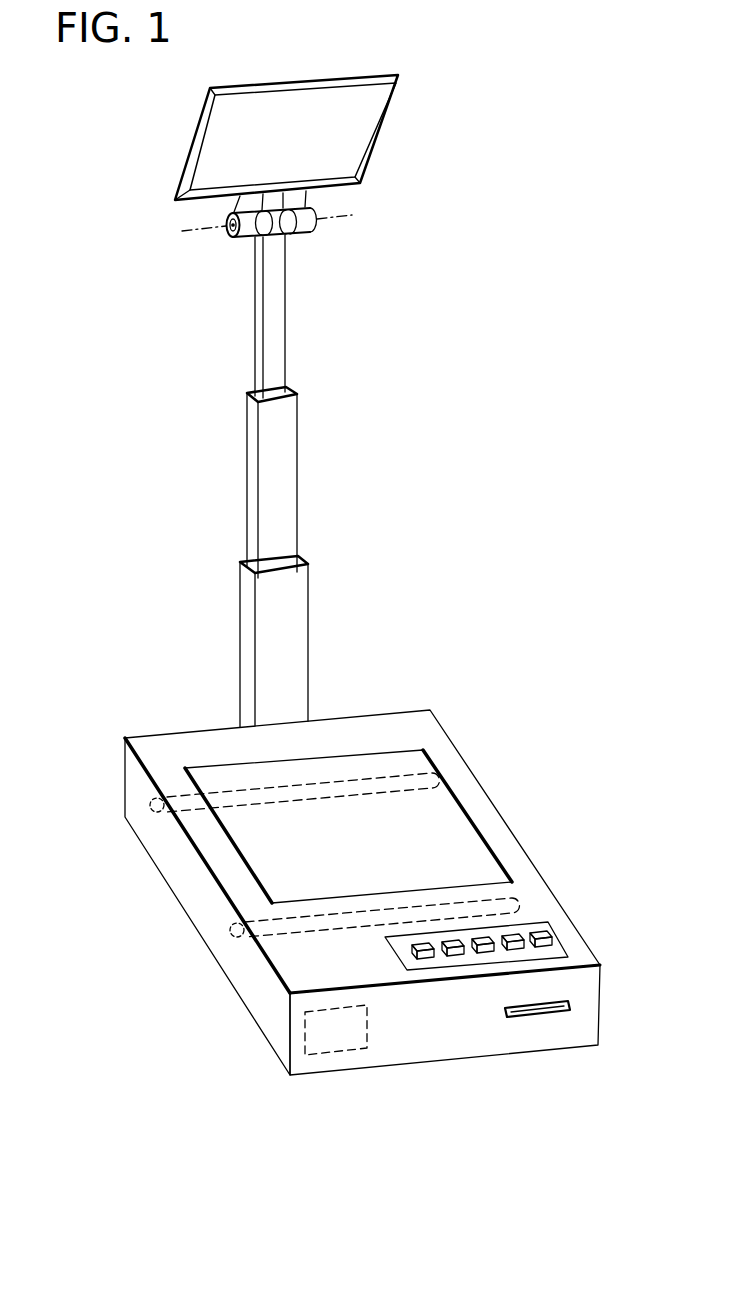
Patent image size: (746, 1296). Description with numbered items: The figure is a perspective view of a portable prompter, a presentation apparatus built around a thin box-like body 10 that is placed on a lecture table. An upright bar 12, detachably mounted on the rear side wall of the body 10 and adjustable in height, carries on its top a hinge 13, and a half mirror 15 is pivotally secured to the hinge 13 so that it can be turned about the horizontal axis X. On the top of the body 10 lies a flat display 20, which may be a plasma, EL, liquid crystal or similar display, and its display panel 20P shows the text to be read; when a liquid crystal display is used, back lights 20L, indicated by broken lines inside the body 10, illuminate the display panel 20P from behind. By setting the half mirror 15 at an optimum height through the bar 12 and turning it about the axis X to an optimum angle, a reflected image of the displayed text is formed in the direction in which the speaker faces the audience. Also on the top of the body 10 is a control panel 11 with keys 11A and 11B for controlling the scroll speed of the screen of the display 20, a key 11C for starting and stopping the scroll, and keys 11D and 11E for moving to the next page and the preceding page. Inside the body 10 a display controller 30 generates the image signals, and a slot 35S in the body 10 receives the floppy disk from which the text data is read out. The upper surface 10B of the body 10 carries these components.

The box-like body 10 is at (173, 897).
The top surface of main body 10B is at (432, 730).
The control panel 11 is at (395, 957).
The key 11A is at (425, 960).
The key 11B is at (458, 957).
The key 11C is at (488, 954).
The key 11D is at (512, 933).
The key 11E is at (550, 935).
The upright bar 12 is at (288, 479).
The hinge 13 is at (229, 228).
The half mirror 15 is at (385, 117).
The flat display 20 is at (440, 798).
The display panel 20P is at (467, 830).
The back lights 20L is at (157, 813).
The display controller 30 is at (305, 1026).
The slot 35S is at (540, 1014).
The horizontal axis X is at (346, 220).